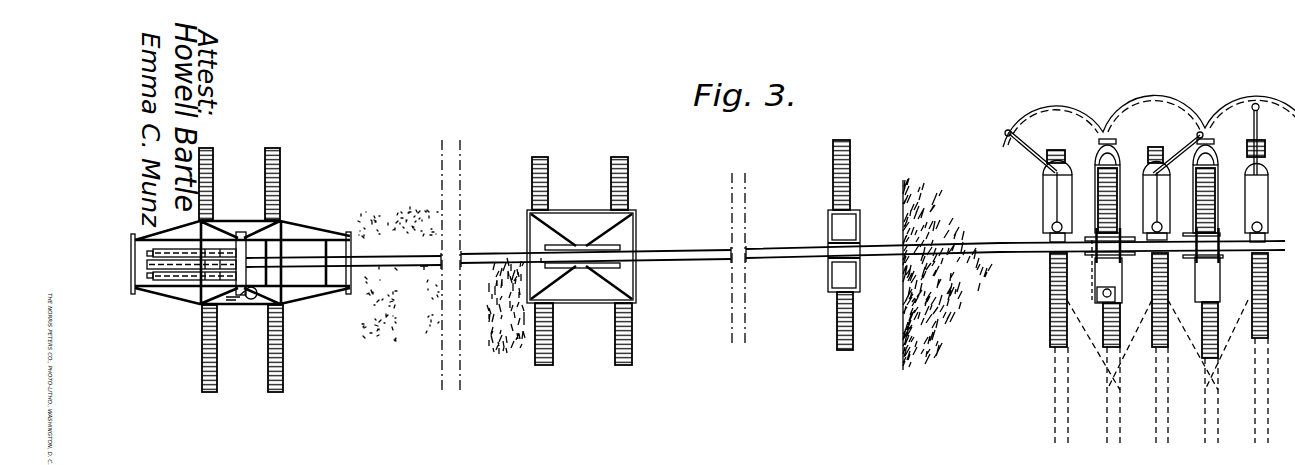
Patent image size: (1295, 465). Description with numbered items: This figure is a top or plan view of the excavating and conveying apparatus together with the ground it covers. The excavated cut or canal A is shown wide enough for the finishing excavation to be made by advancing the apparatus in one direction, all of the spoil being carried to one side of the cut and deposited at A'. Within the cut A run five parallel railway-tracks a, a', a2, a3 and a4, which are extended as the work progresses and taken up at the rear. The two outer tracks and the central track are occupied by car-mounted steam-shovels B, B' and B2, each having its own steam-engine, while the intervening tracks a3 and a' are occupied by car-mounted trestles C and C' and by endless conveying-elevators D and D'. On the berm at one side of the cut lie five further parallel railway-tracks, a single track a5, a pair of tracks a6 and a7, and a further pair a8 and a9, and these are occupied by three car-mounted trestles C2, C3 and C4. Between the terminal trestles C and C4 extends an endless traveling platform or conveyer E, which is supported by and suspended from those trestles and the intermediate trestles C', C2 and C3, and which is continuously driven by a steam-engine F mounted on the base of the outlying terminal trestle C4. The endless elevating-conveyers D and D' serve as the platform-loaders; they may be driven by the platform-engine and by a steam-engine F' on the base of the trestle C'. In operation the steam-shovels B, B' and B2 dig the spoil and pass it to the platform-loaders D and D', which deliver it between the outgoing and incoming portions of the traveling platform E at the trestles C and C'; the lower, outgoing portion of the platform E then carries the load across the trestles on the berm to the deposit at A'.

The railway-track a is at (1265, 348).
The railway-track a' is at (1225, 371).
The railway-track a2 is at (1180, 348).
The railway-track a3 is at (1118, 371).
The railway-track a4 is at (1075, 348).
The railway-track a5 is at (848, 331).
The railway-track a6 is at (626, 346).
The railway-track a7 is at (547, 347).
The railway-track a8 is at (278, 359).
The railway-track a9 is at (212, 359).
The excavated cut A is at (956, 274).
The spoil deposit A' is at (489, 306).
The car-mounted steam-shovel B is at (1262, 173).
The car-mounted steam-shovel B' is at (1173, 186).
The car-mounted steam-shovel B2 is at (1038, 186).
The car-mounted trestle C is at (1209, 239).
The car-mounted trestle C' is at (1112, 240).
The car-mounted trestle C2 is at (856, 251).
The car-mounted trestle C3 is at (593, 256).
The car-mounted trestle C4 is at (241, 252).
The endless conveying-elevator D is at (1213, 220).
The endless conveying-elevator D' is at (1115, 221).
The endless traveling platform E is at (765, 247).
The steam-engine F is at (241, 307).
The steam-engine F' is at (1095, 293).